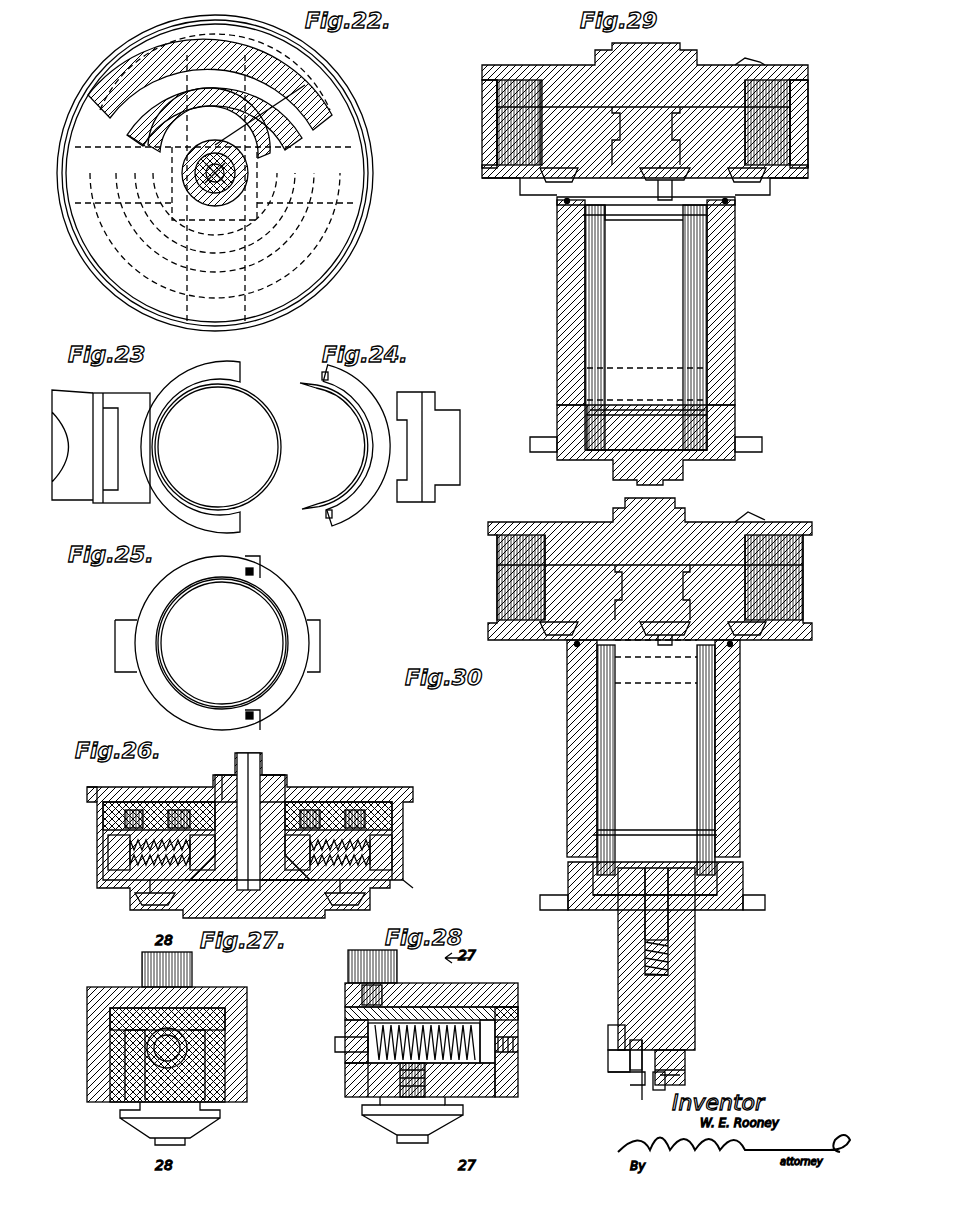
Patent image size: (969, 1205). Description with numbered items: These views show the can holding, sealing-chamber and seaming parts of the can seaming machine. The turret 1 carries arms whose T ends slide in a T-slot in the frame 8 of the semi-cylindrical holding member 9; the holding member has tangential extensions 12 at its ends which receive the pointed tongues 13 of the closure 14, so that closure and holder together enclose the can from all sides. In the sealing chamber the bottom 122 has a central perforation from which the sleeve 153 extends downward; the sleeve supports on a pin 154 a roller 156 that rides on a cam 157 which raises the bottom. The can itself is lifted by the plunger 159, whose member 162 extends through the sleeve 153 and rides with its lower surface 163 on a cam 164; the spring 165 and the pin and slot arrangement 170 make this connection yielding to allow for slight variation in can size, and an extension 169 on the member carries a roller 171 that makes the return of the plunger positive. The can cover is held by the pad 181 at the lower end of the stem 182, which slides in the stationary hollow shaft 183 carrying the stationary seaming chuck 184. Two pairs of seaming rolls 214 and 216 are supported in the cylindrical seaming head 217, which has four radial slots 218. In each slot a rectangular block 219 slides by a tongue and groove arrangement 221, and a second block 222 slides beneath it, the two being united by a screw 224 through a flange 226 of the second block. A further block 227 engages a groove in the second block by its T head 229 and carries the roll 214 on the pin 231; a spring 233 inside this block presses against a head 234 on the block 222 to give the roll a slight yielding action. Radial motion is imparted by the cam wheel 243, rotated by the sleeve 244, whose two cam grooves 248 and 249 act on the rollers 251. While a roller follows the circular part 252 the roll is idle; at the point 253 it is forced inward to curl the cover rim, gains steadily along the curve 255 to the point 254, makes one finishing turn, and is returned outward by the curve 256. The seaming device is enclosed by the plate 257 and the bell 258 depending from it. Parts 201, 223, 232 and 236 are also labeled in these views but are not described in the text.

In FIG. 23, the turret 1 is at (65, 430).
In FIG. 23, the frame 8 is at (118, 500).
In FIG. 23, the holding member 9 is at (147, 468).
In FIG. 25, the holding member 9 is at (145, 655).
In FIG. 29, the holding member 9 is at (560, 295).
In FIG. 30, the holding member 9 is at (570, 742).
In FIG. 23, the tangential extensions 12 is at (250, 522).
In FIG. 24, the pointed tongues 13 is at (320, 490).
In FIG. 25, the pointed tongues 13 is at (235, 690).
In FIG. 24, the closure 14 is at (365, 508).
In FIG. 25, the closure 14 is at (292, 612).
In FIG. 29, the closure 14 is at (722, 275).
In FIG. 30, the closure 14 is at (730, 725).
In FIG. 29, the bottom 122 is at (720, 430).
In FIG. 30, the bottom 122 is at (745, 880).
In FIG. 30, the sleeve 153 is at (695, 975).
In FIG. 30, the pin 154 is at (615, 1025).
In FIG. 30, the roller 156 is at (608, 1060).
In FIG. 30, the cam 157 is at (608, 1078).
In FIG. 29, the plunger 159 is at (700, 420).
In FIG. 30, the plunger 159 is at (700, 845).
In FIG. 30, the member 162 is at (668, 960).
In FIG. 30, the lower surface 163 is at (635, 1070).
In FIG. 30, the cam 164 is at (642, 1080).
In FIG. 30, the spring 165 is at (668, 940).
In FIG. 30, the extension 169 is at (680, 1065).
In FIG. 30, the pin and slot arrangement 170 is at (660, 900).
In FIG. 30, the roller 171 is at (658, 1090).
In FIG. 26, the pad 181 is at (243, 890).
In FIG. 29, the pad 181 is at (650, 205).
In FIG. 26, the stem 182 is at (258, 775).
In FIG. 29, the stem 182 is at (640, 205).
In FIG. 26, the hollow shaft 183 is at (270, 780).
In FIG. 26, the seaming chuck 184 is at (290, 890).
In FIG. 29, the lug 201 is at (757, 46).
In FIG. 30, the lug 201 is at (745, 517).
In FIG. 26, the rolls 214 is at (400, 908).
In FIG. 28, the rolls 214 is at (400, 1118).
In FIG. 29, the rolls 214 is at (763, 202).
In FIG. 30, the rolls 214 is at (752, 635).
In FIG. 29, the rolls 216 is at (668, 168).
In FIG. 30, the rolls 216 is at (668, 622).
In FIG. 26, the seaming head 217 is at (205, 778).
In FIG. 29, the seaming head 217 is at (530, 135).
In FIG. 26, the radial slots 218 is at (420, 835).
In FIG. 27, the rectangular block 219 is at (195, 985).
In FIG. 28, the rectangular block 219 is at (470, 985).
In FIG. 27, the tongue and groove arrangement 221 is at (260, 990).
In FIG. 27, the second block 222 is at (220, 1068).
In FIG. 28, the second block 222 is at (518, 1078).
In FIG. 27, the port 223 is at (208, 1045).
In FIG. 28, the screw 224 is at (518, 1003).
In FIG. 28, the flange 226 is at (518, 990).
In FIG. 27, the block 227 is at (200, 1090).
In FIG. 28, the block 227 is at (345, 1080).
In FIG. 27, the T head 229 is at (212, 1020).
In FIG. 28, the pin 231 is at (420, 1080).
In FIG. 28, the valve disc 232 is at (450, 1125).
In FIG. 28, the spring 233 is at (470, 1040).
In FIG. 28, the head 234 is at (510, 1045).
In FIG. 26, the hub 236 is at (238, 770).
In FIG. 22, the cam wheel 243 is at (372, 150).
In FIG. 26, the cam wheel 243 is at (405, 808).
In FIG. 26, the sleeve 244 is at (225, 790).
In FIG. 22, the cam groove 248 is at (152, 75).
In FIG. 22, the cam groove 249 is at (290, 100).
In FIG. 26, the rollers 251 is at (345, 782).
In FIG. 22, the circular part 252 is at (214, 119).
In FIG. 22, the point 253 is at (167, 122).
In FIG. 22, the point 254 is at (194, 173).
In FIG. 22, the curve 255 is at (219, 143).
In FIG. 22, the curve 256 is at (198, 183).
In FIG. 26, the plate 257 is at (100, 790).
In FIG. 29, the plate 257 is at (812, 48).
In FIG. 30, the plate 257 is at (795, 522).
In FIG. 26, the bell 258 is at (405, 872).
In FIG. 29, the bell 258 is at (808, 128).
In FIG. 30, the bell 258 is at (812, 585).